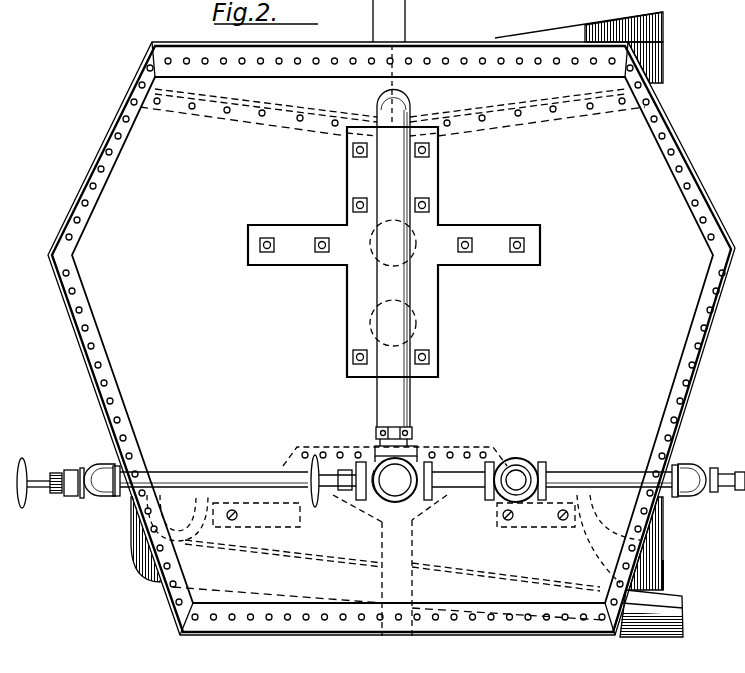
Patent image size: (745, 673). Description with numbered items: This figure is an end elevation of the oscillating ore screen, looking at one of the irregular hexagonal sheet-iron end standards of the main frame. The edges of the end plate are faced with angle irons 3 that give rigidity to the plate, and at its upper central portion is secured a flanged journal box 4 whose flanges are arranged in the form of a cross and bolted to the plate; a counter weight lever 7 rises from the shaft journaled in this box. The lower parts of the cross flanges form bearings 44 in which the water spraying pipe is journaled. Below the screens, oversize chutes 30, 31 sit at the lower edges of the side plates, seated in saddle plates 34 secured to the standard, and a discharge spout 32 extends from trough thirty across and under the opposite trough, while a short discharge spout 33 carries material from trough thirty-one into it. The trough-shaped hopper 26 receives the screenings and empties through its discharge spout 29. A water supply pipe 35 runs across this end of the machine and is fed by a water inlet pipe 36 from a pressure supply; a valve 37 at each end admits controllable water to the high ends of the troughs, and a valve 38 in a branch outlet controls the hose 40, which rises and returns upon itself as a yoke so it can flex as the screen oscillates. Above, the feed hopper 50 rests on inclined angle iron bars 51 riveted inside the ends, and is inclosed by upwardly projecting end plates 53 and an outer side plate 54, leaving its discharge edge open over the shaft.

The angle irons 3 is at (450, 80).
The flanged journal box 4 is at (415, 243).
The counter weight lever 7 is at (405, 16).
The hopper 26 is at (450, 447).
The discharge spout 29 is at (413, 547).
The oversize chute 30 is at (130, 545).
The oversize chute 31 is at (664, 540).
The discharge spout 32 is at (684, 619).
The short discharge spout 33 is at (664, 572).
The saddle plates 34 is at (268, 528).
The water supply pipe 35 is at (214, 472).
The water inlet pipe 36 is at (516, 465).
The valve 37 is at (62, 462).
The valve 38 is at (372, 500).
The hose 40 is at (411, 397).
The bearings 44 is at (416, 326).
The hopper 50 is at (663, 55).
The angle iron bars 51 is at (272, 111).
The end plates 53 is at (508, 38).
The plate 54 is at (655, 36).